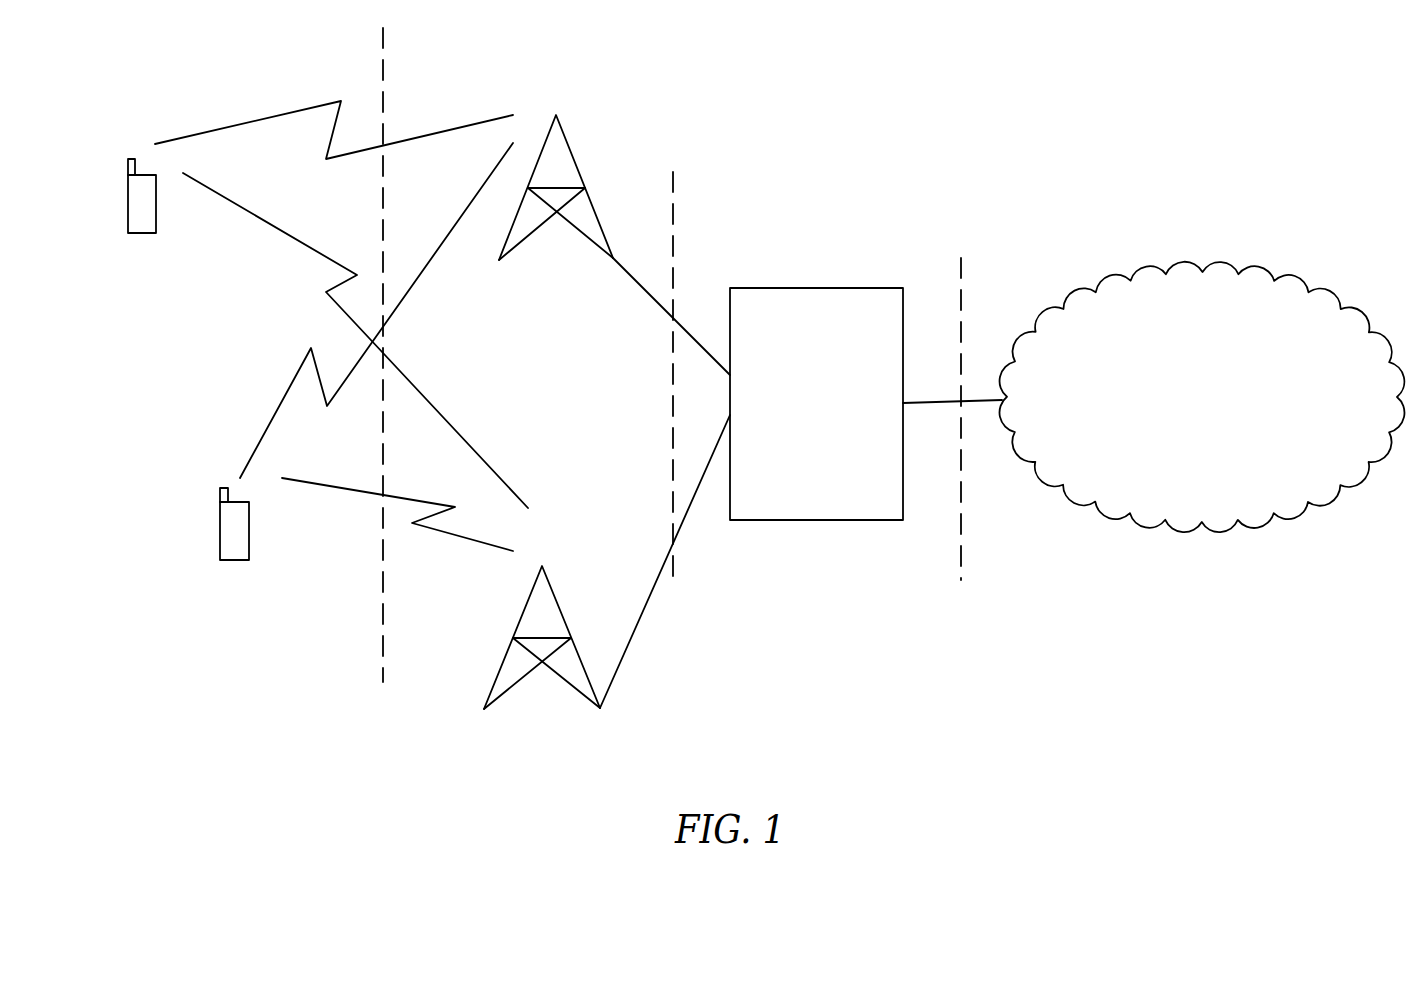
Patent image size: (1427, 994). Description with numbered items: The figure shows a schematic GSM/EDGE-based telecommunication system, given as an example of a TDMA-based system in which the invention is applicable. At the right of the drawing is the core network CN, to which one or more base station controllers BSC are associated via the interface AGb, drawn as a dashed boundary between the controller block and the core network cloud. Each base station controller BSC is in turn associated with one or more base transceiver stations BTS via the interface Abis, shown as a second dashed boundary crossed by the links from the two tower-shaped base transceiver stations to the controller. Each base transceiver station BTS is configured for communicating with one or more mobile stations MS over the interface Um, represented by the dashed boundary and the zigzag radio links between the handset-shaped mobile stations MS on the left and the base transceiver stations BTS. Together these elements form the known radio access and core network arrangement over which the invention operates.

The mobile station MS is at (166, 381).
The base transceiver station BTS is at (548, 430).
The base station controller BSC is at (816, 404).
The core network CN is at (1202, 397).
The Um interface Um is at (372, 380).
The Abis interface Abis is at (669, 392).
The A/Gb interface AGb is at (961, 436).